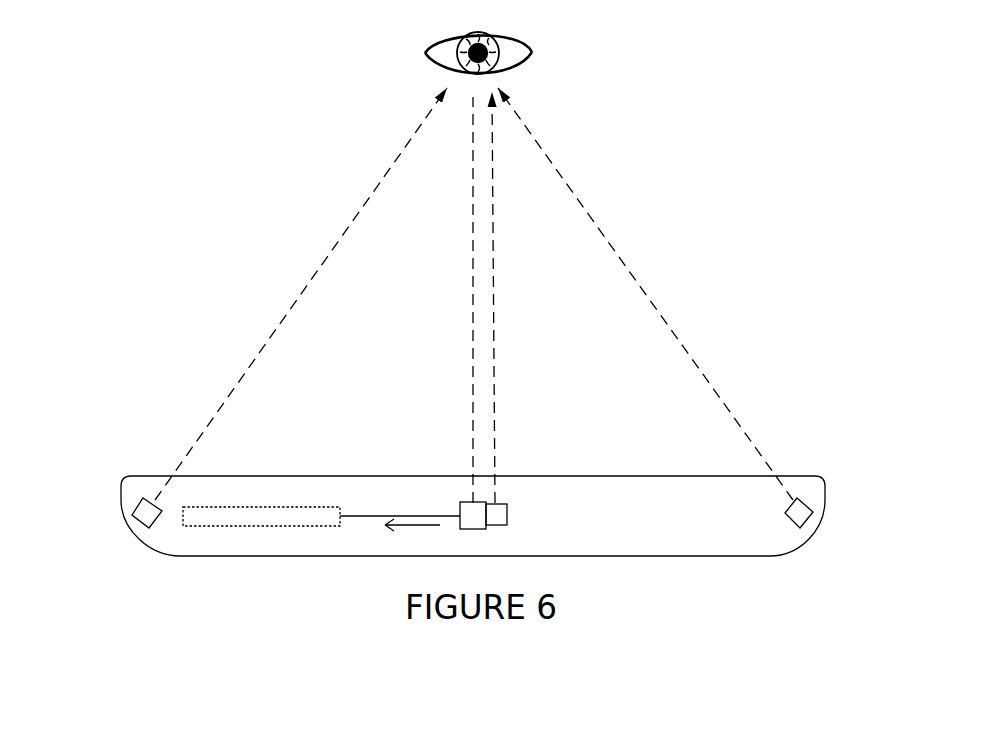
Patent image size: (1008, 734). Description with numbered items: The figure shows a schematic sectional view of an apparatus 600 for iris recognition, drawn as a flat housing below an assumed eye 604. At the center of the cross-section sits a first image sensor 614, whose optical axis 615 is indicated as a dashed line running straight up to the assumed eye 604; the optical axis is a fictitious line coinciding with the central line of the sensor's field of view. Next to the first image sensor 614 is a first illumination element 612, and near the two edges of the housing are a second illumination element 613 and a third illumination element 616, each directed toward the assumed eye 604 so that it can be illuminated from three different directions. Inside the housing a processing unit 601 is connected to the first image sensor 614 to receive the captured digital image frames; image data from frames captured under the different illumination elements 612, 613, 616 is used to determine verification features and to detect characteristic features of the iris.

The apparatus 600 is at (152, 545).
The processing unit 601 is at (262, 507).
The assumed eye 604 is at (502, 34).
The first illumination element 612 is at (507, 514).
The second illumination element 613 is at (797, 513).
The first image sensor 614 is at (460, 505).
The optical axis 615 is at (471, 320).
The third illumination element 616 is at (140, 512).